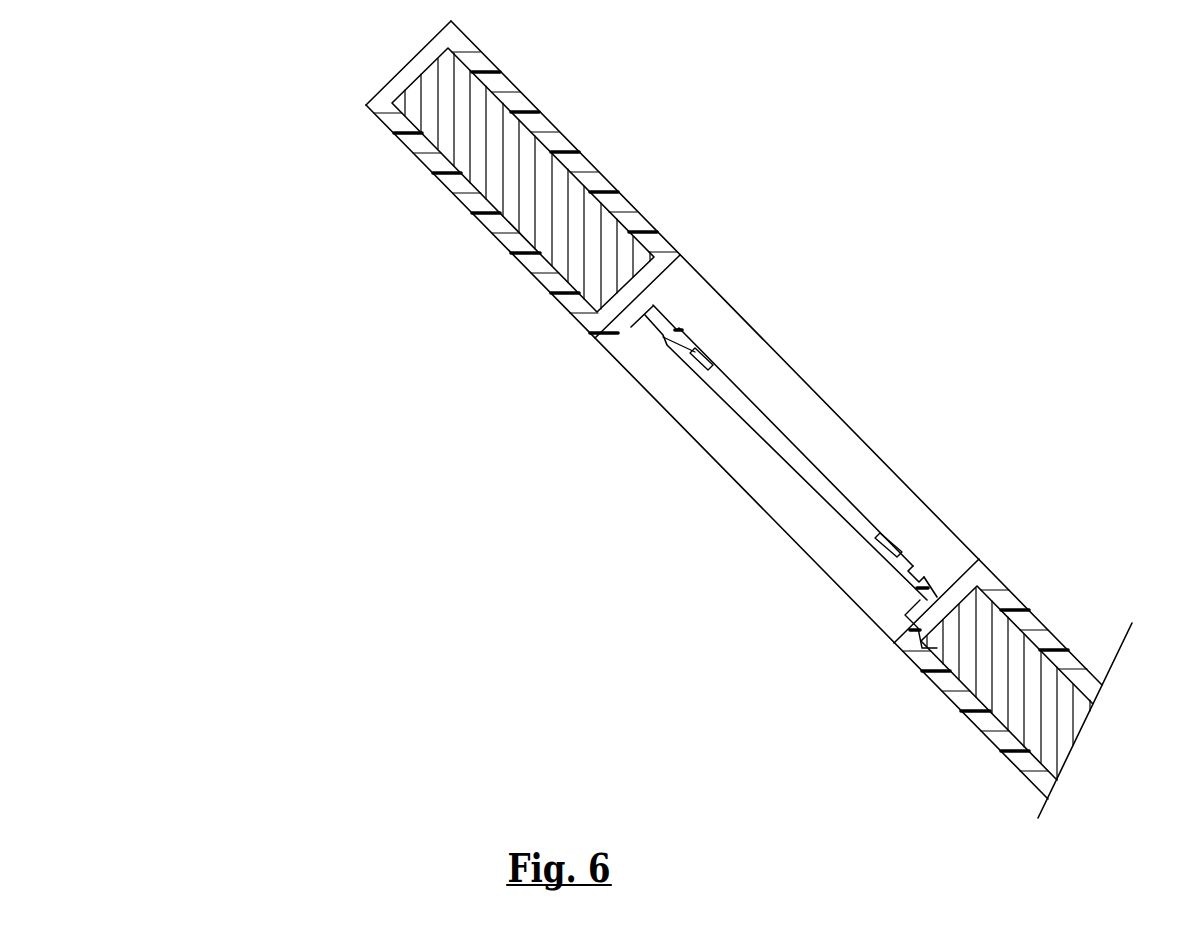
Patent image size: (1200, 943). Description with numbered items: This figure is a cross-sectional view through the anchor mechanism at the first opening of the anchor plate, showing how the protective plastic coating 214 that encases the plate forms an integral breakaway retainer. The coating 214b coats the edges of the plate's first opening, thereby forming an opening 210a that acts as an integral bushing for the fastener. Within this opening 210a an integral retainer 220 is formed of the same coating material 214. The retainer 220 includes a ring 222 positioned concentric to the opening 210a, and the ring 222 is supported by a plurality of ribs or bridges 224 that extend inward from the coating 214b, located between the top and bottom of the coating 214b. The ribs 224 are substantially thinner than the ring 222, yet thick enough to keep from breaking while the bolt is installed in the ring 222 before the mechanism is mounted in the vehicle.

The protective plastic coating 214 is at (1033, 612).
The coating 214b is at (712, 296).
The opening 210a is at (641, 323).
The integral retainer 220 is at (911, 558).
The ring 222 is at (905, 582).
The ribs or bridges 224 is at (938, 600).